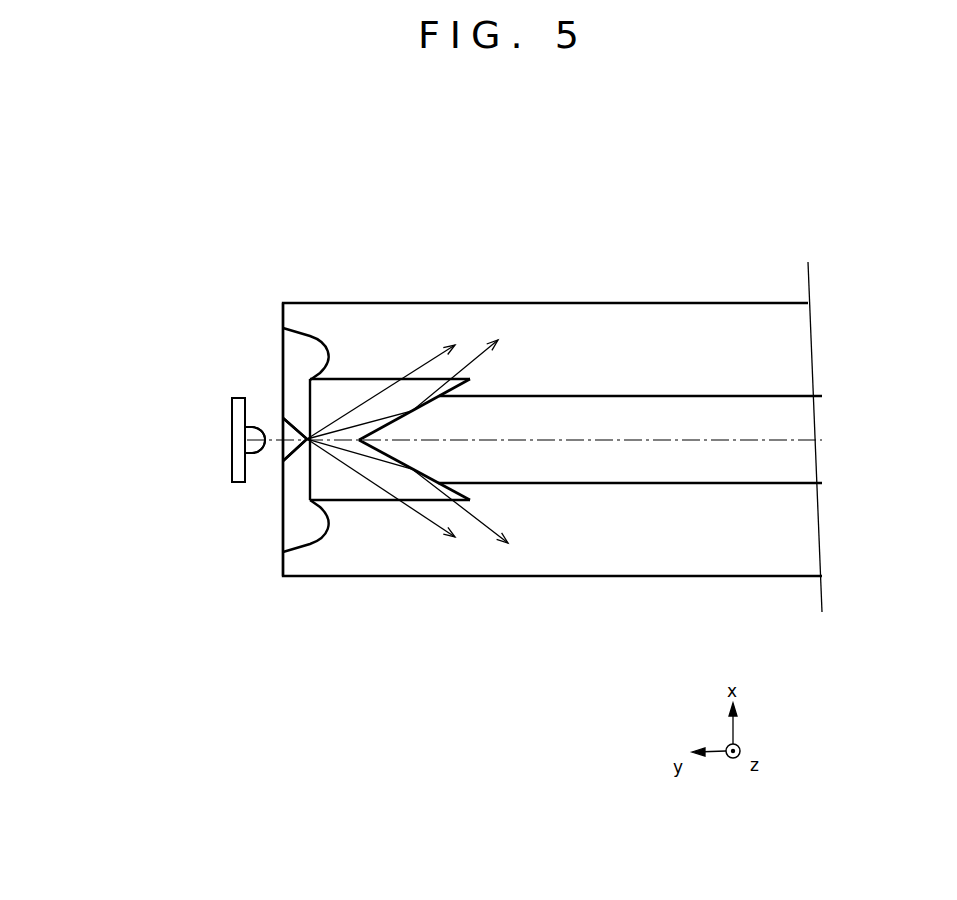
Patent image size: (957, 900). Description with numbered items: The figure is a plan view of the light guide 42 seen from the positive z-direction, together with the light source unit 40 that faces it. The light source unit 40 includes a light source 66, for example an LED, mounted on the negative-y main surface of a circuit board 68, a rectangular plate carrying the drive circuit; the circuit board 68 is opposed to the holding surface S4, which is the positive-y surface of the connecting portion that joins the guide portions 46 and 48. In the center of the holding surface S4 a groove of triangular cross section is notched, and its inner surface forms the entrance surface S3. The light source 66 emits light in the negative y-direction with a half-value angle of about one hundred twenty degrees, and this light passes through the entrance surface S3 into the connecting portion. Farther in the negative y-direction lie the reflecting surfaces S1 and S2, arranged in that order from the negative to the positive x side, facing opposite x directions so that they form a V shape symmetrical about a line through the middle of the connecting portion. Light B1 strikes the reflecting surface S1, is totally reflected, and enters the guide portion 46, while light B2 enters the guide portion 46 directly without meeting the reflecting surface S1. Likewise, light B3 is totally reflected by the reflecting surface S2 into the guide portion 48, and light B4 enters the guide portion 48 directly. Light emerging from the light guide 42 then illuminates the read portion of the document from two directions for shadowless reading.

The light source unit 40 is at (228, 430).
The light guide 42 is at (619, 277).
The guide portion 46 is at (693, 565).
The guide portion 48 is at (713, 315).
The light source 66 is at (250, 441).
The circuit board 68 is at (238, 443).
The reflecting surface S1 is at (462, 492).
The reflecting surface S2 is at (452, 395).
The entrance surface S3 is at (298, 450).
The holding surface S4 is at (285, 538).
The light B1 is at (426, 491).
The light B2 is at (381, 506).
The light B3 is at (419, 380).
The light B4 is at (381, 380).